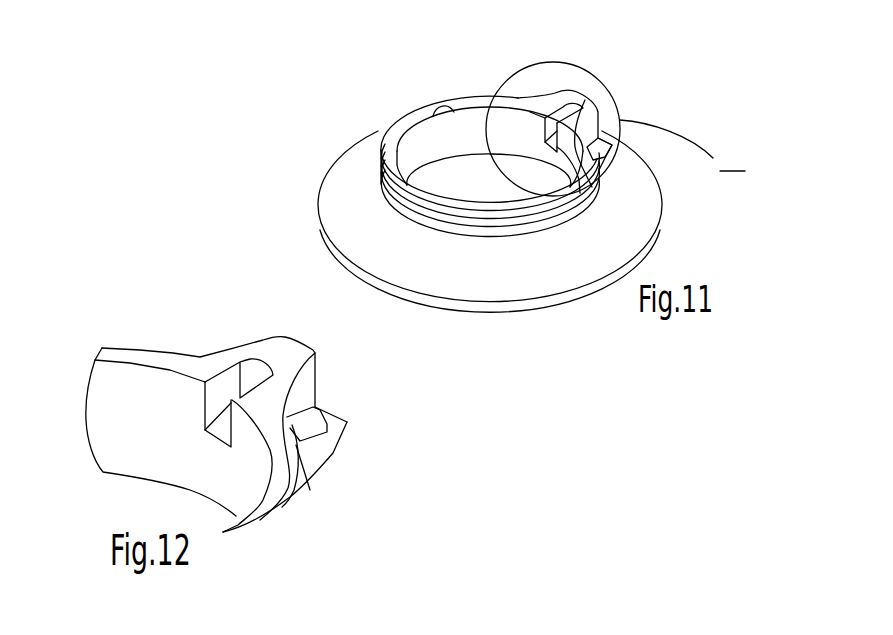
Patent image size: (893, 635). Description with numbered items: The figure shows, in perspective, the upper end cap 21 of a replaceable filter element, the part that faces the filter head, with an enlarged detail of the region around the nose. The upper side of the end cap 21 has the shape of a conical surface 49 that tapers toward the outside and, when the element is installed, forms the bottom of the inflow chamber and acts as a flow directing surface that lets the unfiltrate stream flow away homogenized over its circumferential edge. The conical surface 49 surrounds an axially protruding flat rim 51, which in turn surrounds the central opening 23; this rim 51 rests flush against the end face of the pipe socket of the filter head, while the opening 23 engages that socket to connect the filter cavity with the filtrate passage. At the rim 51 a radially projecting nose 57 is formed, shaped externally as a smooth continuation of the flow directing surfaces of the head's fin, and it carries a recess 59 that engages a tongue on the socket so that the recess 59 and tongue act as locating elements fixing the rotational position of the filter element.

In FIG. 11, the upper end cap 21 is at (596, 329).
In FIG. 11, the central opening 23 is at (410, 111).
In FIG. 12, the central opening 23 is at (165, 393).
In FIG. 11, the conical surface 49 is at (350, 188).
In FIG. 11, the rim 51 is at (396, 143).
In FIG. 12, the rim 51 is at (130, 357).
In FIG. 11, the nose 57 is at (595, 104).
In FIG. 12, the nose 57 is at (295, 358).
In FIG. 11, the recess 59 is at (555, 104).
In FIG. 12, the recess 59 is at (233, 385).